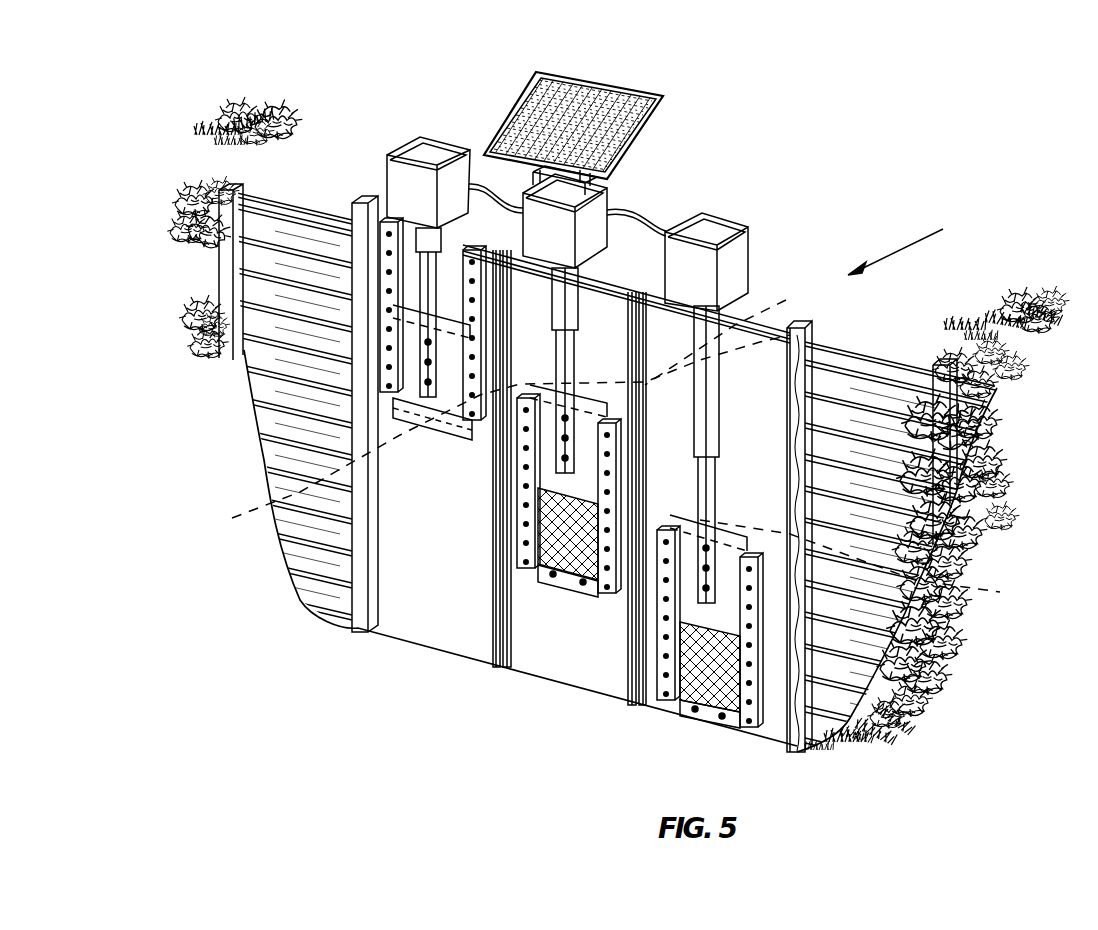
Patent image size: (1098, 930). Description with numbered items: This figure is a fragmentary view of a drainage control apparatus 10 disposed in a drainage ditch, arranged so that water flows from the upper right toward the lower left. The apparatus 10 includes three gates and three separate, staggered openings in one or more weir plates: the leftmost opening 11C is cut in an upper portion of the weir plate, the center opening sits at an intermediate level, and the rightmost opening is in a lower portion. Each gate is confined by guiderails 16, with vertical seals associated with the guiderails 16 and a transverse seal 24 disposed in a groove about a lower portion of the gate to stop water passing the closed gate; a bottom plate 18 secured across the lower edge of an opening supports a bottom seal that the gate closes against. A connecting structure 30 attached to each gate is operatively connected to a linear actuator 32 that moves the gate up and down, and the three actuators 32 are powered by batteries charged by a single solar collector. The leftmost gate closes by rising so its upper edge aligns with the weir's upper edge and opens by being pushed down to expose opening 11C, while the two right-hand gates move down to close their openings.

The drainage control apparatus 10 is at (897, 98).
The opening 11C is at (450, 275).
The guiderails 16 is at (395, 385).
The bottom plate 18 is at (708, 718).
The transverse seal 24 is at (617, 445).
The connecting structure 30 is at (425, 302).
The linear actuator 32 is at (413, 185).